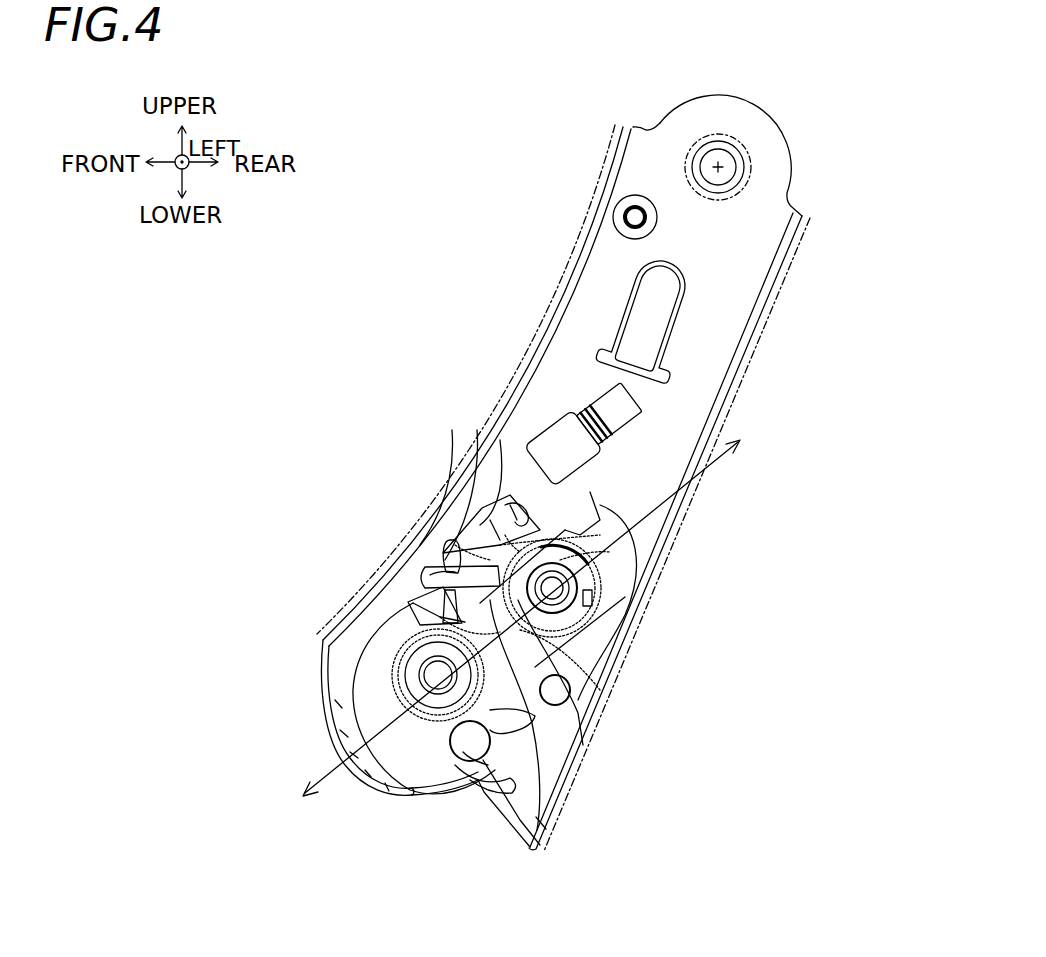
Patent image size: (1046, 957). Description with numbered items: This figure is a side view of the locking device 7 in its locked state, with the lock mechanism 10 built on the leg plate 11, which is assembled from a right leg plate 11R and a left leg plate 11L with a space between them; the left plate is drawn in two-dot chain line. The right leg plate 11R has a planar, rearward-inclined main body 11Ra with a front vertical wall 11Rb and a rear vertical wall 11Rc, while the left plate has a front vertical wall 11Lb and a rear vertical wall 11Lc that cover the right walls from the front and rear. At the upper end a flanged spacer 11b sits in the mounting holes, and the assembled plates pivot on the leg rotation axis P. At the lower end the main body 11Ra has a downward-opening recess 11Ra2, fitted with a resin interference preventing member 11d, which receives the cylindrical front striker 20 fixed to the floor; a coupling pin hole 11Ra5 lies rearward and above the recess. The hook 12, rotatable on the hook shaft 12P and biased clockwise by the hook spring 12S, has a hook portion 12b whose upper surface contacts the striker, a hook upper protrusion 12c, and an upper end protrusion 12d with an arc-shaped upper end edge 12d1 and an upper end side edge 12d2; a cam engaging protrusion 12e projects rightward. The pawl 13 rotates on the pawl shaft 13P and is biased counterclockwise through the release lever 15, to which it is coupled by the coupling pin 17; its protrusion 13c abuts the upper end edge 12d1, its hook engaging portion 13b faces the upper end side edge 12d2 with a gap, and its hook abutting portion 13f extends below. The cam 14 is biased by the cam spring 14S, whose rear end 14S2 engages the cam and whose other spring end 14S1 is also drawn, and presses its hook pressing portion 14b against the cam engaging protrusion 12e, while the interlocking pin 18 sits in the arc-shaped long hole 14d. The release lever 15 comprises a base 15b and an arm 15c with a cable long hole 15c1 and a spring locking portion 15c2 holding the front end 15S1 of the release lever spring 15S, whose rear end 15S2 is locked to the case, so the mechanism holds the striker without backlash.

The locking device 7 is at (829, 123).
The lock mechanism 10 is at (778, 302).
The leg plate 11 is at (565, 470).
The left leg plate 11L is at (589, 488).
The right leg plate 11R is at (594, 488).
The front vertical wall 11Lb is at (606, 162).
The front vertical wall 11Rb is at (612, 192).
The rear vertical wall 11Lc is at (736, 400).
The rear vertical wall 11Rc is at (728, 372).
The main body 11Ra is at (663, 143).
The recess 11Ra2 is at (470, 725).
The coupling pin hole 11Ra5 is at (567, 700).
The spacer 11b is at (703, 143).
The interference preventing member 11d is at (397, 790).
The leg rotation axis P is at (720, 165).
The hook 12 is at (432, 798).
The hook shaft 12P is at (420, 667).
The hook spring 12S is at (397, 688).
The hook portion 12b is at (453, 752).
The hook upper protrusion 12c is at (495, 752).
The upper end protrusion 12d is at (443, 567).
The upper end edge 12d1 is at (448, 558).
The upper end side edge 12d2 is at (450, 583).
The cam engaging protrusion 12e is at (445, 593).
The pawl 13 is at (530, 738).
The pawl shaft 13P is at (573, 593).
The hook engaging portion 13b is at (440, 615).
The protrusion 13c is at (460, 545).
The hook abutting portion 13f is at (505, 765).
The cam 14 is at (537, 725).
The hook pressing portion 14b is at (450, 628).
The long hole 14d is at (563, 663).
The cam spring 14S is at (610, 632).
The link first shaft portion 14S1 is at (455, 545).
The rear end 14S2 is at (565, 530).
The release lever 15 is at (483, 497).
The base 15b is at (590, 492).
The arm 15c is at (470, 520).
The long hole 15c1 is at (430, 578).
The spring locking portion 15c2 is at (510, 505).
The release lever spring 15S is at (600, 535).
The front end 15S1 is at (505, 535).
The rear end 15S2 is at (610, 552).
The coupling pin 17 is at (590, 598).
The interlocking pin 18 is at (490, 520).
The front striker 20 is at (543, 823).